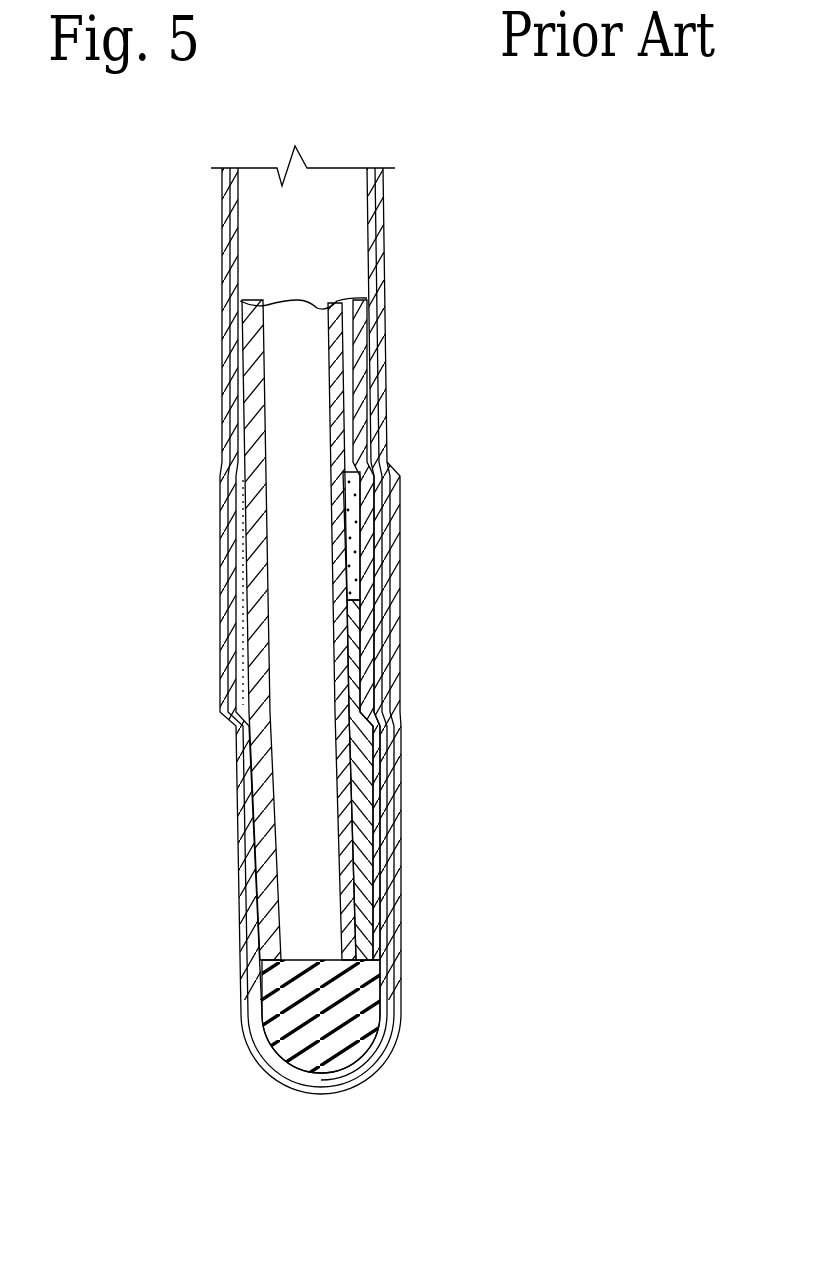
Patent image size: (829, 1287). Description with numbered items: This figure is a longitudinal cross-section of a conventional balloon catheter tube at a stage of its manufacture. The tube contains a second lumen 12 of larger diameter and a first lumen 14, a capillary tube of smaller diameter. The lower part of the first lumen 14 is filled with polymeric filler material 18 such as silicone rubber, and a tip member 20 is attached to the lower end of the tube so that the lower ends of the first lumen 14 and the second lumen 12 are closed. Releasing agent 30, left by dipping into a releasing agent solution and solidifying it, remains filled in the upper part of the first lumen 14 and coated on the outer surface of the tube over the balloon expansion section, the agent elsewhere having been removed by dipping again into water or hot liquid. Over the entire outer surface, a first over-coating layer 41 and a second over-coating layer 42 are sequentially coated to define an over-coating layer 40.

The second lumen 12 is at (278, 331).
The first lumen 14 is at (352, 362).
The polymeric filler material 18 is at (385, 652).
The tip member 20 is at (303, 1056).
The releasing agent 30 is at (392, 589).
The over-coating layer 40 is at (480, 733).
The first over-coating layer 41 is at (397, 728).
The second over-coating layer 42 is at (397, 827).